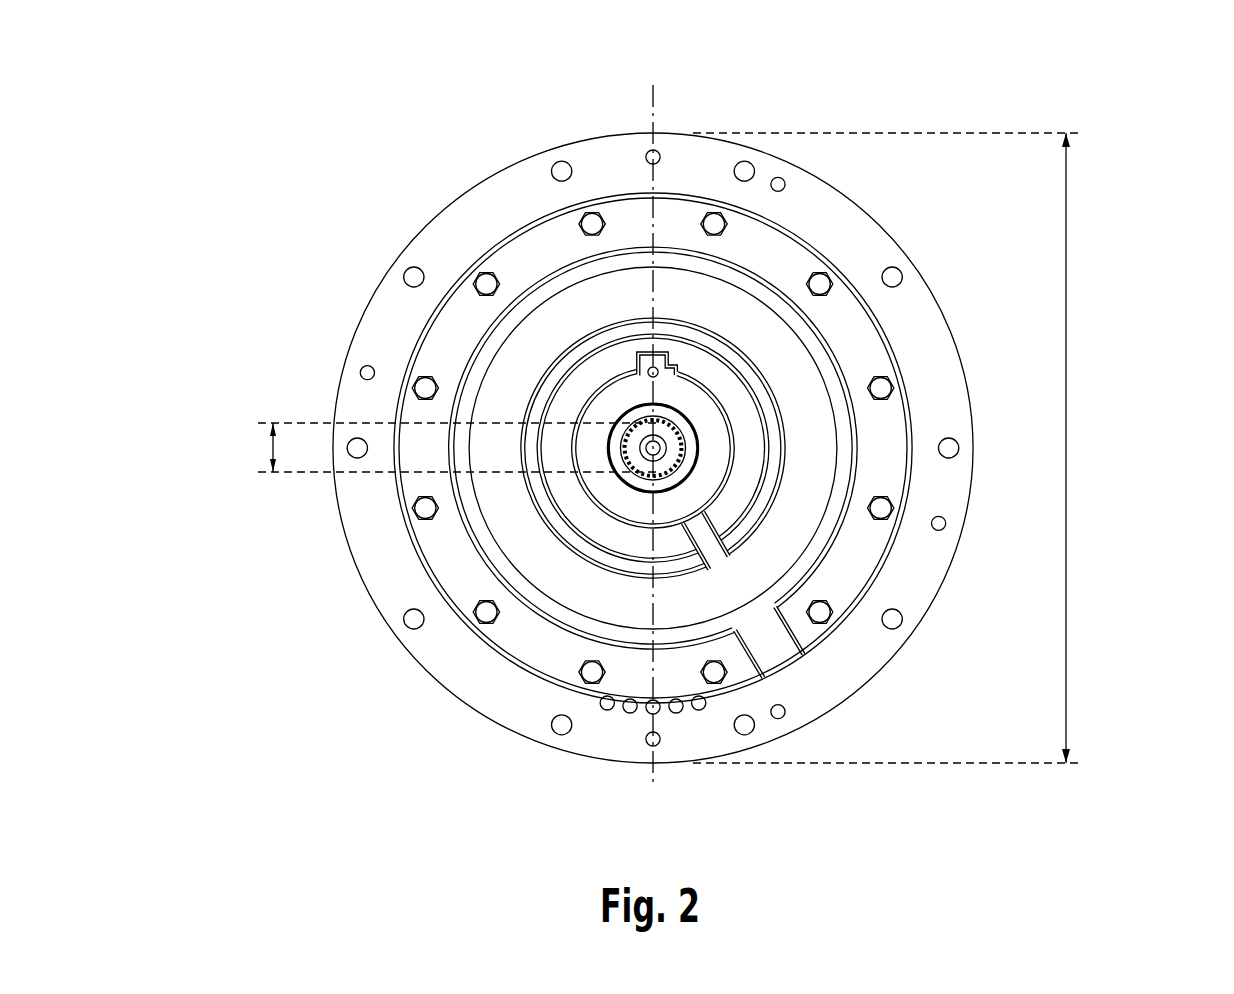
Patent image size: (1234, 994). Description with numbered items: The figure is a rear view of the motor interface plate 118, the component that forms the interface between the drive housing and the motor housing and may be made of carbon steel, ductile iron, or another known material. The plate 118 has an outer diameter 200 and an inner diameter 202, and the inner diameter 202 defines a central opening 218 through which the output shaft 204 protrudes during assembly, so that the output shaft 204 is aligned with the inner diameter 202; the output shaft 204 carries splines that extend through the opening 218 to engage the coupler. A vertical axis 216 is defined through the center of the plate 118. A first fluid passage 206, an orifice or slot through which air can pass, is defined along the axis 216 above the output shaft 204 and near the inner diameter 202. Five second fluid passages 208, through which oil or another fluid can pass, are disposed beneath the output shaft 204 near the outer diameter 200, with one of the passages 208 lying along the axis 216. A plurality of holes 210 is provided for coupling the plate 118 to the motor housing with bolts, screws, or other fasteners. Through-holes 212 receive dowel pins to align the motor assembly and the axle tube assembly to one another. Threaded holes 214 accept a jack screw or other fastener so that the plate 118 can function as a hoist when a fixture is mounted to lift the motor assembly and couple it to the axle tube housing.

The plate 118 is at (372, 172).
The outer diameter 200 is at (1068, 447).
The inner diameter 202 is at (270, 447).
The output shaft 204 is at (678, 444).
The first fluid passage 206 is at (646, 374).
The second fluid passages 208 is at (608, 711).
The holes 210 is at (550, 167).
The through-holes 212 is at (786, 183).
The threaded holes 214 is at (646, 157).
The vertical axis 216 is at (656, 100).
The central opening 218 is at (697, 465).